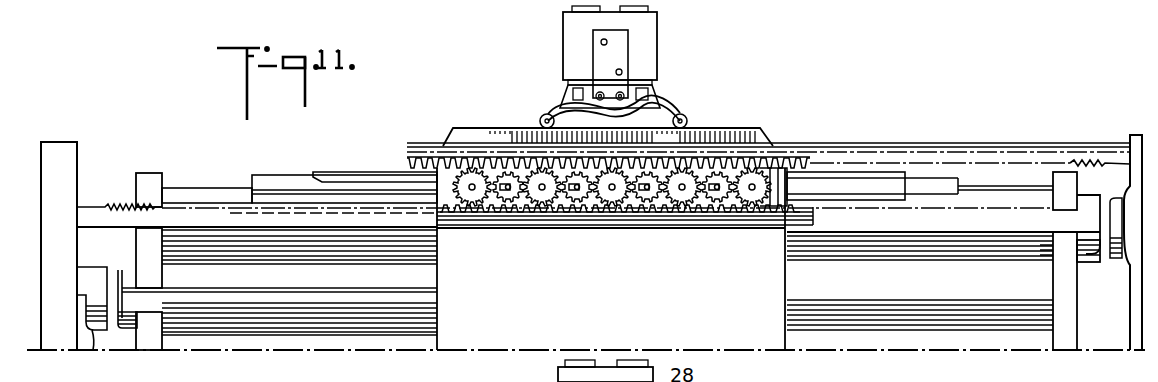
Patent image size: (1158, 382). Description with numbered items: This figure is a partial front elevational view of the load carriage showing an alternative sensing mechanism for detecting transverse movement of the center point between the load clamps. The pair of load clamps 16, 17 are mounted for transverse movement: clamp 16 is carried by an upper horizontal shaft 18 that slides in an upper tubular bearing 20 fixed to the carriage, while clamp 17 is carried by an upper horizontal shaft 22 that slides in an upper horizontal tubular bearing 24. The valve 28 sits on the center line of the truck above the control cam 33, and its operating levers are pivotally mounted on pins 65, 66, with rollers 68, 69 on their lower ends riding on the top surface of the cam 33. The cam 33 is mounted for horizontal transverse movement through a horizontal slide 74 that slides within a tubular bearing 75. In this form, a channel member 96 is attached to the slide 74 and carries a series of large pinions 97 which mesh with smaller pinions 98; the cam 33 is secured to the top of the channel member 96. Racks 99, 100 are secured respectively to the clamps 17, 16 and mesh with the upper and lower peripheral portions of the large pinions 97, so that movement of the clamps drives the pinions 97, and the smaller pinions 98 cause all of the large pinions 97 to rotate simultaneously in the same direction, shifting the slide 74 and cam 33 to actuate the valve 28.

The load clamp 16 is at (65, 338).
The load clamp 17 is at (1134, 340).
The upper horizontal shaft 18 is at (124, 330).
The upper tubular bearing 20 is at (910, 318).
The upper horizontal shaft 22 is at (1088, 254).
The upper horizontal tubular bearing 24 is at (212, 187).
The valve 28 is at (650, 52).
The control cam 33 is at (762, 130).
The pin 65 is at (592, 83).
The pin 66 is at (638, 84).
The roller 68 is at (543, 114).
The roller 69 is at (685, 114).
The horizontal slide 74 is at (293, 182).
The tubular bearing 75 is at (357, 175).
The channel member 96 is at (633, 232).
The large pinion 97 is at (472, 206).
The smaller pinion 98 is at (508, 204).
The rack 99 is at (846, 149).
The rack 100 is at (152, 222).